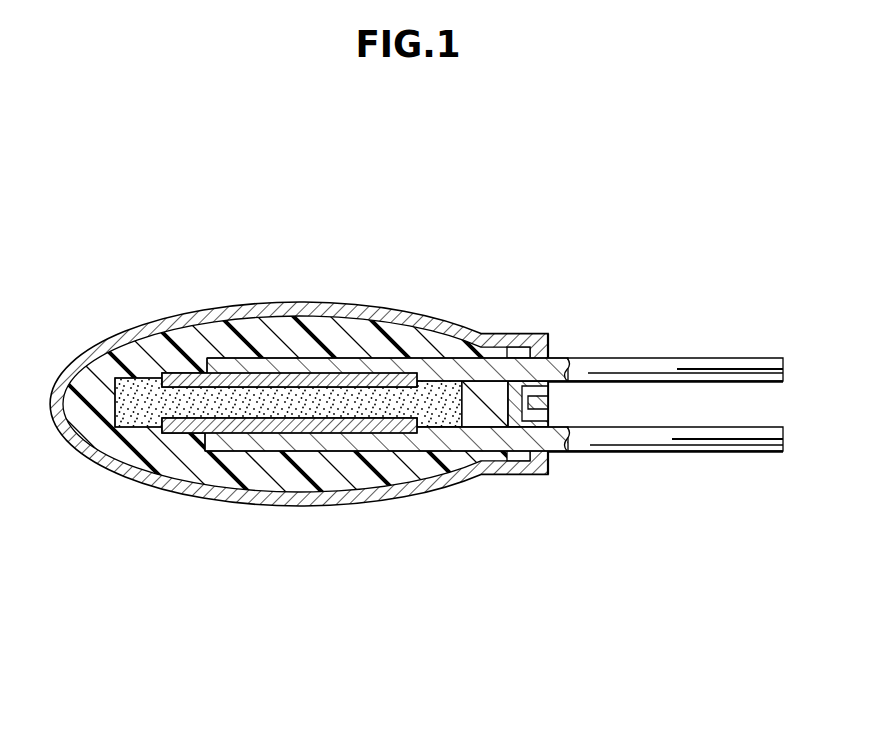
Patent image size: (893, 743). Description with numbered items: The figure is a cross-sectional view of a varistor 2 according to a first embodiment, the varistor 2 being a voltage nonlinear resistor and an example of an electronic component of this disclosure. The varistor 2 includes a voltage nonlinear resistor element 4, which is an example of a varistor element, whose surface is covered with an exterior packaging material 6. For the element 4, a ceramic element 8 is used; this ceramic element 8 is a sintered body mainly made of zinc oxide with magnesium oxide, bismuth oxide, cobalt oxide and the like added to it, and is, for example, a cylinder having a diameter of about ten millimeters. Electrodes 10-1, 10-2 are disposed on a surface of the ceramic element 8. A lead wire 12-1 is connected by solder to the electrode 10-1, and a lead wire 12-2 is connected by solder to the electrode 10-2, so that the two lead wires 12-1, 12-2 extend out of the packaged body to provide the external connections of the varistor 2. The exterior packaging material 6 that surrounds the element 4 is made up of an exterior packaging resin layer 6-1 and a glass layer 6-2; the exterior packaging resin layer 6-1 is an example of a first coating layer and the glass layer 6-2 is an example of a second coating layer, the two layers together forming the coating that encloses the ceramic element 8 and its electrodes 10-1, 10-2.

The varistor 2 is at (392, 421).
The voltage nonlinear resistor element 4 is at (450, 444).
The exterior packaging material 6 is at (392, 328).
The exterior packaging resin layer 6-1 is at (74, 352).
The glass layer 6-2 is at (94, 358).
The ceramic element 8 is at (120, 430).
The electrode 10-1 is at (292, 357).
The electrode 10-2 is at (387, 493).
The lead wire 12-1 is at (680, 357).
The lead wire 12-2 is at (680, 452).